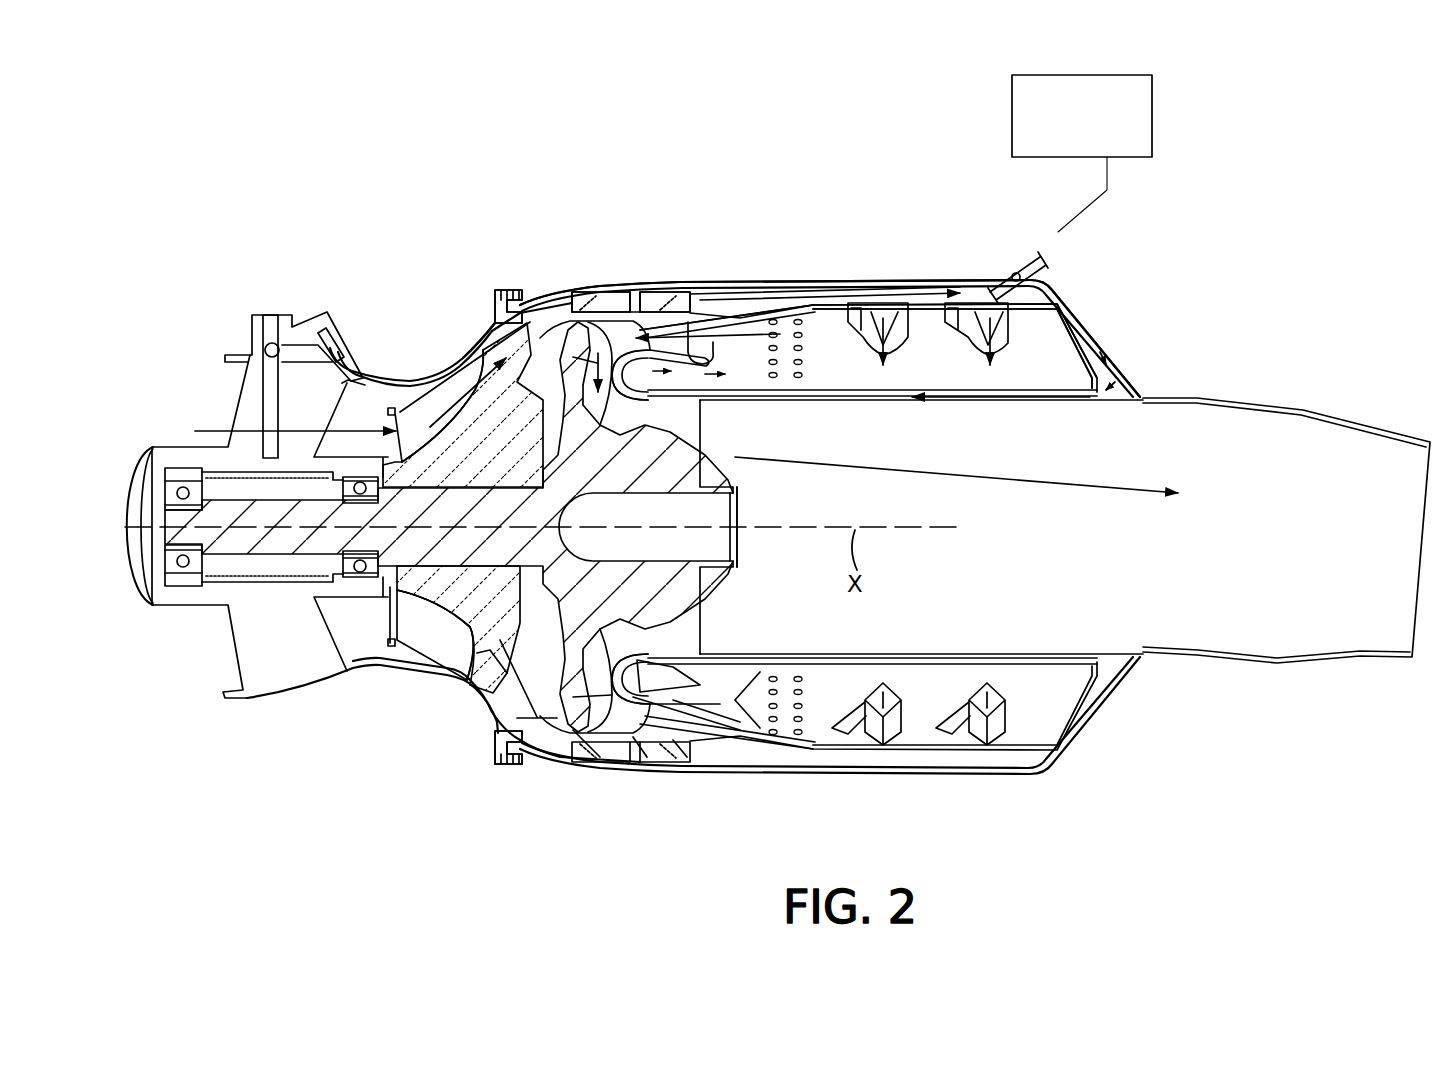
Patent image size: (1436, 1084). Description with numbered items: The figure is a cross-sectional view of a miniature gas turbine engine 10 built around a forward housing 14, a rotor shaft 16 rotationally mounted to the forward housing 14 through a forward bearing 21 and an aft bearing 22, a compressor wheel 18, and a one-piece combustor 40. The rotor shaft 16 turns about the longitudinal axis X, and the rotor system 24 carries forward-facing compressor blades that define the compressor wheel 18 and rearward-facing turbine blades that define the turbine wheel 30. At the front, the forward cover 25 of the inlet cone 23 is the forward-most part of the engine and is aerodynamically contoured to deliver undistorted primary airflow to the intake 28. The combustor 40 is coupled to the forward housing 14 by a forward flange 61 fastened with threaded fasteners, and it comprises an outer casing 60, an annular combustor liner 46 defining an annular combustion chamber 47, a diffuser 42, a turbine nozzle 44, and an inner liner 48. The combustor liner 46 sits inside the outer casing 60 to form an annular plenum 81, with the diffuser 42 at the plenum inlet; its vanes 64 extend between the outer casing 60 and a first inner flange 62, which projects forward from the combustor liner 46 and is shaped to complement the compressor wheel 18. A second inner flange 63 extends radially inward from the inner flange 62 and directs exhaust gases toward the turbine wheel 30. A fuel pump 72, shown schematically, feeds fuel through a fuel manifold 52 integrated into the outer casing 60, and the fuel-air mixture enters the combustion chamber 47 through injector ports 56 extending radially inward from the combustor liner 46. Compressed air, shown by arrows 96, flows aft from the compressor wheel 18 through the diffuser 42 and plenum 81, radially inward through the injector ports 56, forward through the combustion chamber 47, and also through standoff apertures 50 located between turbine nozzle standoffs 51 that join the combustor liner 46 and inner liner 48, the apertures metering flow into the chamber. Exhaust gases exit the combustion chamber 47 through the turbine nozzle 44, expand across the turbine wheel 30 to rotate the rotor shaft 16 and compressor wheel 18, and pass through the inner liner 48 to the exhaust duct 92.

The miniature gas turbine engine 10 is at (692, 176).
The forward housing 14 is at (300, 318).
The rotor shaft 16 is at (430, 515).
The compressor wheel 18 is at (463, 450).
The forward bearing 21 is at (190, 587).
The aft bearing 22 is at (363, 580).
The inlet cone 23 is at (108, 452).
The rotor system 24 is at (682, 537).
The forward cover 25 is at (133, 580).
The intake 28 is at (216, 392).
The turbine wheel 30 is at (618, 620).
The one-piece combustor 40 is at (850, 282).
The diffuser 42 is at (613, 292).
The turbine nozzle 44 is at (707, 303).
The combustor liner 46 is at (1040, 296).
The combustion chamber 47 is at (914, 383).
The inner liner 48 is at (820, 386).
The standoff apertures 50 is at (705, 447).
The turbine nozzle standoffs 51 is at (663, 666).
The fuel manifold 52 is at (1012, 277).
The injector ports 56 is at (975, 372).
The outer casing 60 is at (907, 282).
The forward flange 61 is at (512, 288).
The inner flange 62 is at (550, 322).
The inner flange 63 is at (560, 712).
The vanes 64 is at (604, 293).
The fuel pump 72 is at (1152, 130).
The annular plenum 81 is at (777, 293).
The exhaust duct 92 is at (1314, 506).
The arrows 96 is at (252, 430).